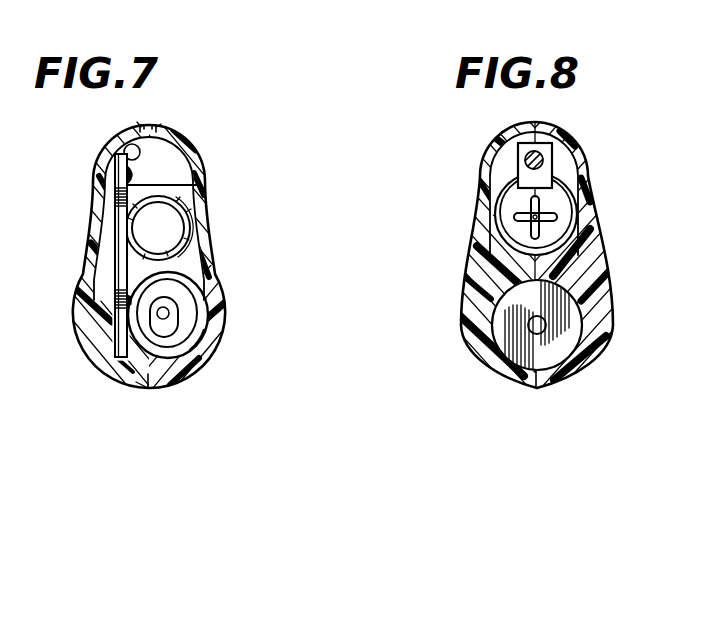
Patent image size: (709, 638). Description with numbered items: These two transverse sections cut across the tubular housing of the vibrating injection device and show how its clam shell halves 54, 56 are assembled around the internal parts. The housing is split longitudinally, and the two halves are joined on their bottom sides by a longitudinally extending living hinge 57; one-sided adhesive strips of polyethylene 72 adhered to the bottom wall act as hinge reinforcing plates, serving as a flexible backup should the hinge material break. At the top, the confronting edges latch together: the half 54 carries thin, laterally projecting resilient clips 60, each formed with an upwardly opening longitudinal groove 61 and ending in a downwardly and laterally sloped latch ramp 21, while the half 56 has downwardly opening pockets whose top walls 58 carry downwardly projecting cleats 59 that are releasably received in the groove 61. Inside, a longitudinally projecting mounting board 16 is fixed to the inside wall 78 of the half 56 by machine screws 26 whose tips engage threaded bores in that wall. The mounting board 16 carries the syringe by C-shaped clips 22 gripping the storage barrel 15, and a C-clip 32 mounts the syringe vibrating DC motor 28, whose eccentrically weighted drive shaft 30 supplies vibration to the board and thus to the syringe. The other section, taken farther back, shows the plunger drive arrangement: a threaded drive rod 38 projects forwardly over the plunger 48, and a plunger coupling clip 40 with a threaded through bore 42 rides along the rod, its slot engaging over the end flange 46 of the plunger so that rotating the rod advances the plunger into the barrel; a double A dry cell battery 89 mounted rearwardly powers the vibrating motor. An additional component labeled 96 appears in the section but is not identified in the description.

In FIG. 7, the latch ramp 21 is at (126, 130).
In FIG. 8, the latch ramp 21 is at (538, 140).
In FIG. 7, the groove 61 is at (141, 124).
In FIG. 7, the top wall 58 is at (151, 124).
In FIG. 7, the cleat 59 is at (160, 126).
In FIG. 7, the slide bar 96 is at (115, 151).
In FIG. 7, the resilient clip 60 is at (143, 138).
In FIG. 7, the machine screw 26 is at (134, 176).
In FIG. 7, the mounting board 16 is at (201, 184).
In FIG. 7, the storage barrel 15 is at (205, 240).
In FIG. 7, the C-shaped clip 22 is at (172, 273).
In FIG. 7, the C-clip 32 is at (192, 281).
In FIG. 7, the clam shell half 54 is at (224, 314).
In FIG. 8, the clam shell half 54 is at (612, 274).
In FIG. 7, the syringe vibrating DC motor 28 is at (208, 334).
In FIG. 7, the eccentrically weighted drive shaft 30 is at (172, 330).
In FIG. 7, the inside wall 78 is at (113, 272).
In FIG. 7, the clam shell half 56 is at (74, 312).
In FIG. 8, the clam shell half 56 is at (465, 285).
In FIG. 7, the adhesive strip 72 is at (145, 389).
In FIG. 7, the living hinge 57 is at (151, 389).
In FIG. 8, the living hinge 57 is at (536, 389).
In FIG. 8, the threaded through bore 42 is at (543, 153).
In FIG. 8, the plunger coupling clip 40 is at (583, 167).
In FIG. 8, the threaded drive rod 38 is at (518, 172).
In FIG. 8, the end flange 46 is at (577, 192).
In FIG. 8, the plunger 48 is at (558, 219).
In FIG. 8, the dry cell battery 89 is at (583, 319).